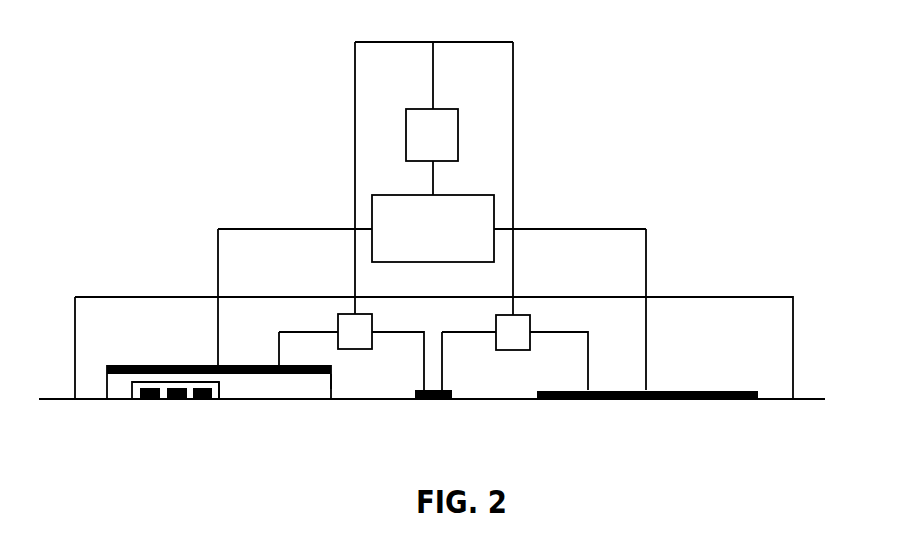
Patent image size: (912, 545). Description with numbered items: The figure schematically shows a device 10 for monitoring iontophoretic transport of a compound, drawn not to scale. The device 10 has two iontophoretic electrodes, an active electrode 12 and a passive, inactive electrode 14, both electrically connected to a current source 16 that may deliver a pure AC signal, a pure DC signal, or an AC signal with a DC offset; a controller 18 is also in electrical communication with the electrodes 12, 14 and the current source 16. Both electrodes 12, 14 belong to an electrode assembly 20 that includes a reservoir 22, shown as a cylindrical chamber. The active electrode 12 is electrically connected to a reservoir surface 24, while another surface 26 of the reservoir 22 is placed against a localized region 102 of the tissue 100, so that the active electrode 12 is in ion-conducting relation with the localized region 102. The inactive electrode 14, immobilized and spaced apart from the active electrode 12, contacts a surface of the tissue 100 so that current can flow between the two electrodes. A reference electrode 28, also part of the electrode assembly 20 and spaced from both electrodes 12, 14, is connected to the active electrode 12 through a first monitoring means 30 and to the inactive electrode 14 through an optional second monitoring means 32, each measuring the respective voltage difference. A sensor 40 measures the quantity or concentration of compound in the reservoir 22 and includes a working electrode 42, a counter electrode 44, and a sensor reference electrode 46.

The device 10 is at (242, 129).
The active electrode 12 is at (168, 365).
The inactive electrode 14 is at (705, 390).
The current source 16 is at (468, 198).
The controller 18 is at (443, 113).
The electrode assembly 20 is at (755, 308).
The reservoir 22 is at (322, 389).
The reservoir surface 24 is at (248, 376).
The reservoir surface 26 is at (310, 400).
The reference electrode 28 is at (447, 390).
The first monitoring means 30 is at (346, 318).
The second monitoring means 32 is at (522, 318).
The sensor 40 is at (132, 390).
The working electrode 42 is at (150, 400).
The counter electrode 44 is at (175, 400).
The sensor reference electrode 46 is at (200, 400).
The tissue 100 is at (450, 455).
The localized region 102 is at (275, 400).